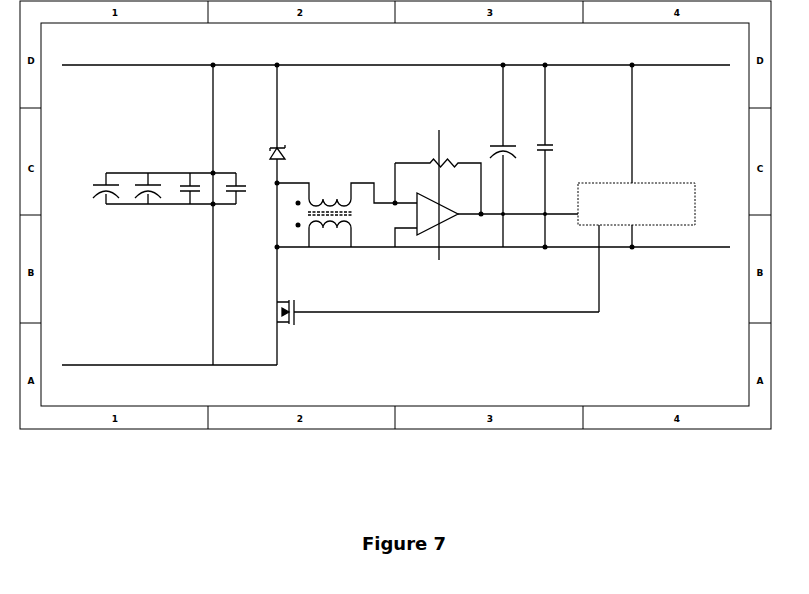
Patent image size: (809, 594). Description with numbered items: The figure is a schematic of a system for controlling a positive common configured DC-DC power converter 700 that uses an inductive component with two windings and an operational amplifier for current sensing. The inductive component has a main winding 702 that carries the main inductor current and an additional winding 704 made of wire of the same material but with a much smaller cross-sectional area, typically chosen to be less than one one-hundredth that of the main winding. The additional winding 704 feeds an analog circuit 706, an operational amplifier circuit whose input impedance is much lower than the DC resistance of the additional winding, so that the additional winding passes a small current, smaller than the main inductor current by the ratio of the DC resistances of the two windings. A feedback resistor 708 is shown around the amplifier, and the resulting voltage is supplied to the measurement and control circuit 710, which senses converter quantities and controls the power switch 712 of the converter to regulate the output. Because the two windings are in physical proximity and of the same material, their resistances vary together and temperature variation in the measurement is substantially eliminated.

The positive common configured DC-DC power converter 700 is at (398, 267).
The main winding 702 is at (339, 225).
The additional winding 704 is at (317, 207).
The analog circuit 706 is at (440, 222).
The feedback resistor 708 is at (438, 163).
The measurement and control circuit 710 is at (648, 226).
The switching transistor 712 is at (295, 324).